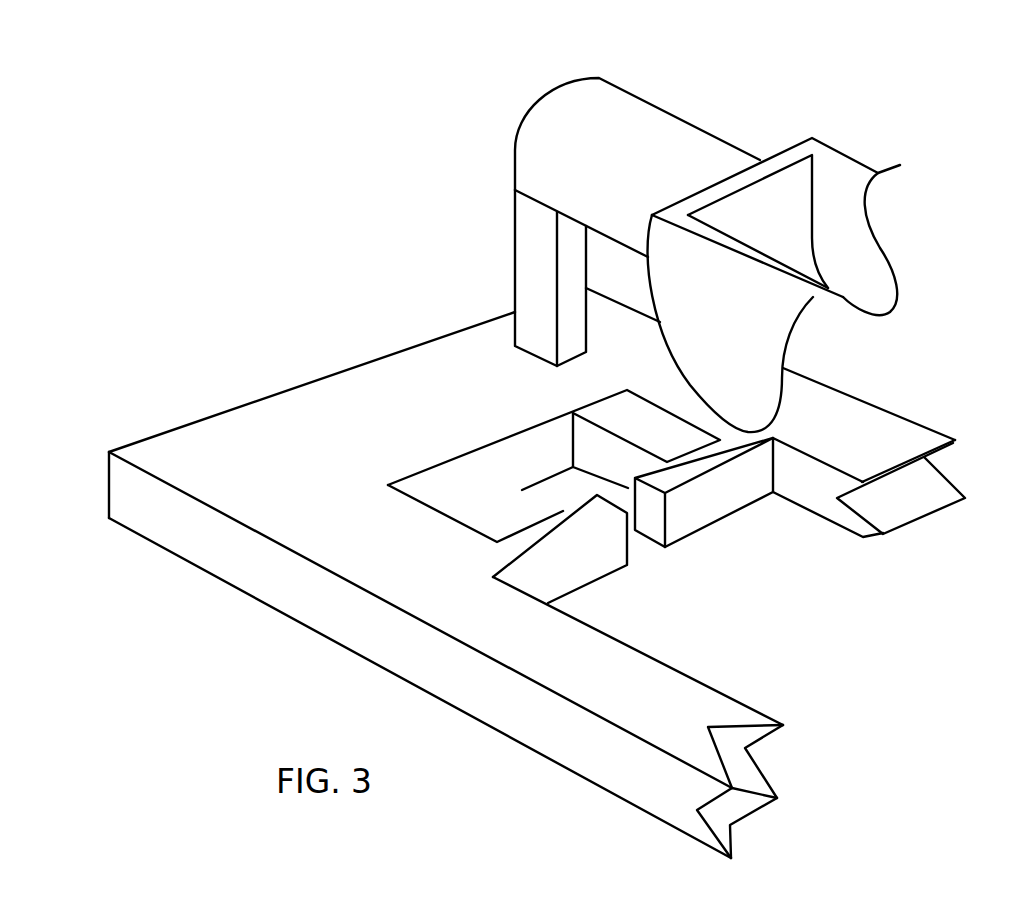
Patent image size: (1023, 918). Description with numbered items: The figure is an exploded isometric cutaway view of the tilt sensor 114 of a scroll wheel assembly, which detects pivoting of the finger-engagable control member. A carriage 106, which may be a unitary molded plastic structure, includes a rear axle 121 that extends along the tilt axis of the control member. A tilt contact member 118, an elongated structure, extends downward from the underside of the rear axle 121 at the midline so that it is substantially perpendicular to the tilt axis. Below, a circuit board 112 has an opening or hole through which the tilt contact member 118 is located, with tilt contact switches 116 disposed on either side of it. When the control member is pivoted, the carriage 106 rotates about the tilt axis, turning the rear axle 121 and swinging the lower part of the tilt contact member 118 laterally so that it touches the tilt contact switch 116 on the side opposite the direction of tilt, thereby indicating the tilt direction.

The carriage 106 is at (825, 245).
The circuit board 112 is at (168, 428).
The tilt sensor 114 is at (700, 229).
The tilt contact switch 116 is at (610, 438).
The tilt contact member 118 is at (532, 268).
The rear axle 121 is at (675, 150).